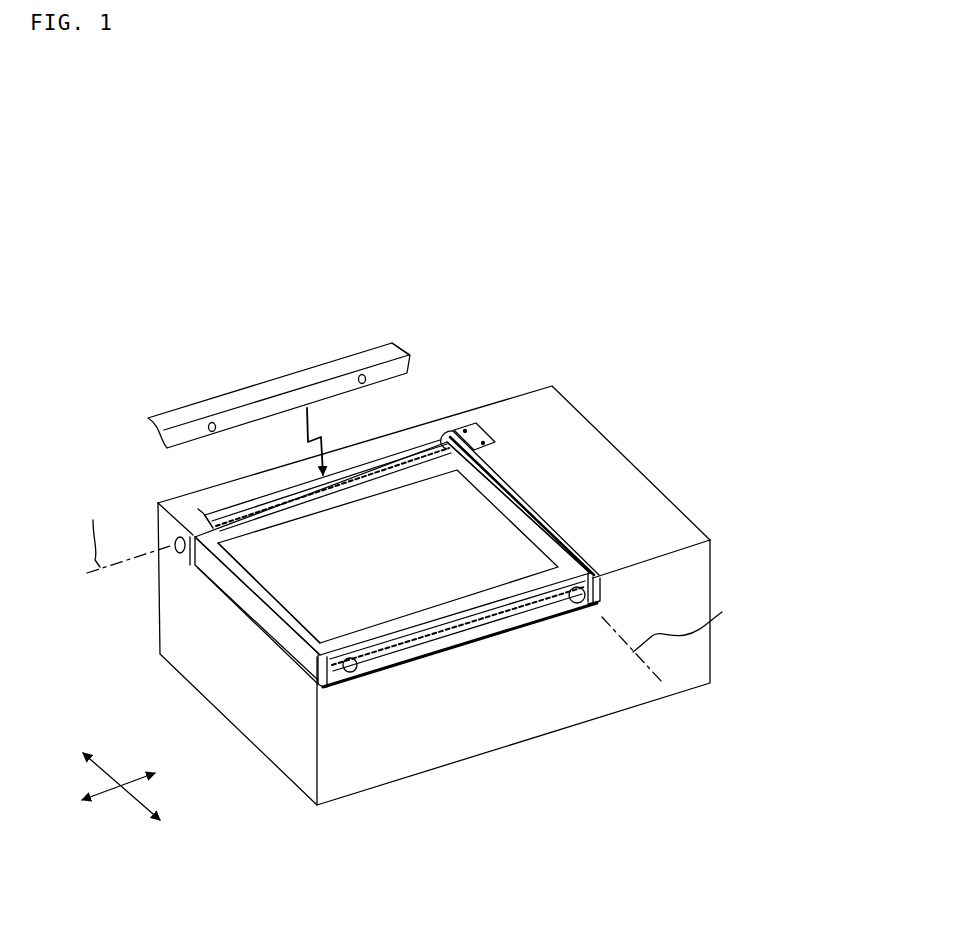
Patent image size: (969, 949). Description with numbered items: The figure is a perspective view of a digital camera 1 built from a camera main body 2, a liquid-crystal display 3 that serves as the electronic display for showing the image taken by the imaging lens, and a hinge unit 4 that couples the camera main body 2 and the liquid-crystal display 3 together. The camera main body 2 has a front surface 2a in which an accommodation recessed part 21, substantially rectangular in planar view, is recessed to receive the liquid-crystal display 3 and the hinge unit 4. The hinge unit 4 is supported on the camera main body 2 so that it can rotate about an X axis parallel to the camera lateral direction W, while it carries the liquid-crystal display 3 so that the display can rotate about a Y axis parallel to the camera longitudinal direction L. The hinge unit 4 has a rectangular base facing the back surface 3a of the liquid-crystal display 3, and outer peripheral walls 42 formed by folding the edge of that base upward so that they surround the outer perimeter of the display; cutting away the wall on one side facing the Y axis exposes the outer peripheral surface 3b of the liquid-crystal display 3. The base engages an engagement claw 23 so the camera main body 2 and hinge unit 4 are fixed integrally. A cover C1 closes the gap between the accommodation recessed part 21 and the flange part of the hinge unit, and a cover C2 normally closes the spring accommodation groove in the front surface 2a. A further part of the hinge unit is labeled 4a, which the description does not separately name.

The digital camera 1 is at (623, 375).
The camera main body 2 is at (665, 515).
The front surface 2a is at (603, 472).
The liquid-crystal display 3 is at (270, 570).
The back surface 3a is at (262, 633).
The outer peripheral surface 3b is at (257, 608).
The hinge unit 4 is at (460, 640).
The rail plate 4a is at (530, 608).
The accommodation recessed part 21 is at (414, 452).
The engagement claw 23 is at (315, 684).
The outer peripheral walls 42 is at (438, 447).
The cover C1 is at (297, 382).
The cover C2 is at (478, 437).